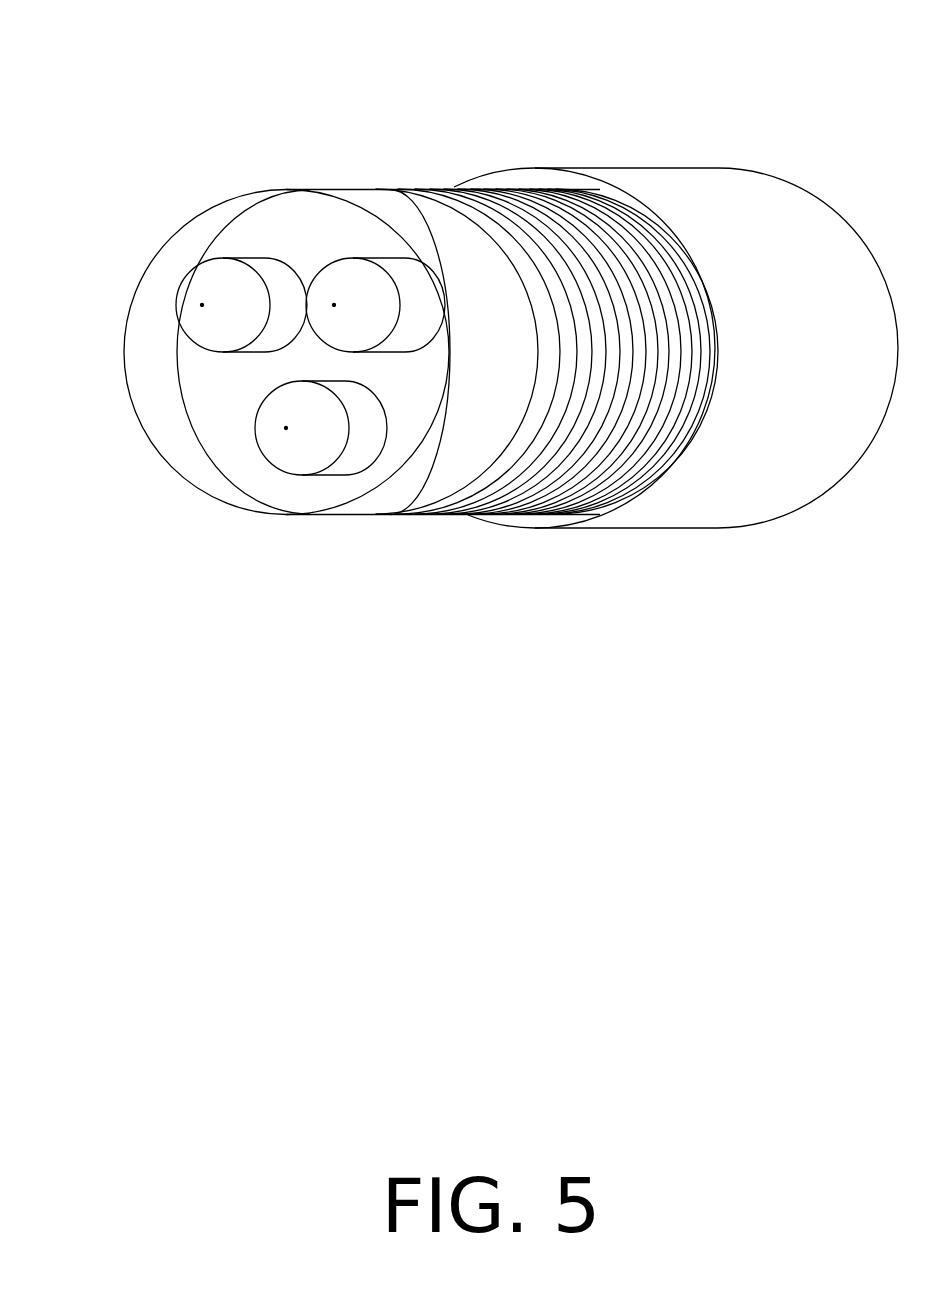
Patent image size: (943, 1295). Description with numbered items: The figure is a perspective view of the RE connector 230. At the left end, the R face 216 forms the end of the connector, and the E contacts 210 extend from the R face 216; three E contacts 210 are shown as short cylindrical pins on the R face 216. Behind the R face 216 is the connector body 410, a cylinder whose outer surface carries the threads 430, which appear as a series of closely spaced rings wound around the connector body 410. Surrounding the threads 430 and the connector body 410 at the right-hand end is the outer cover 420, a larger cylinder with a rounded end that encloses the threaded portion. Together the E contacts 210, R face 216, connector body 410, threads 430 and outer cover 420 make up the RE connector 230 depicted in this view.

The E contact 210 is at (207, 282).
The R face 216 is at (252, 463).
The RE connector 230 is at (702, 115).
The connector body 410 is at (433, 480).
The outer cover 420 is at (748, 492).
The threads 430 is at (598, 443).